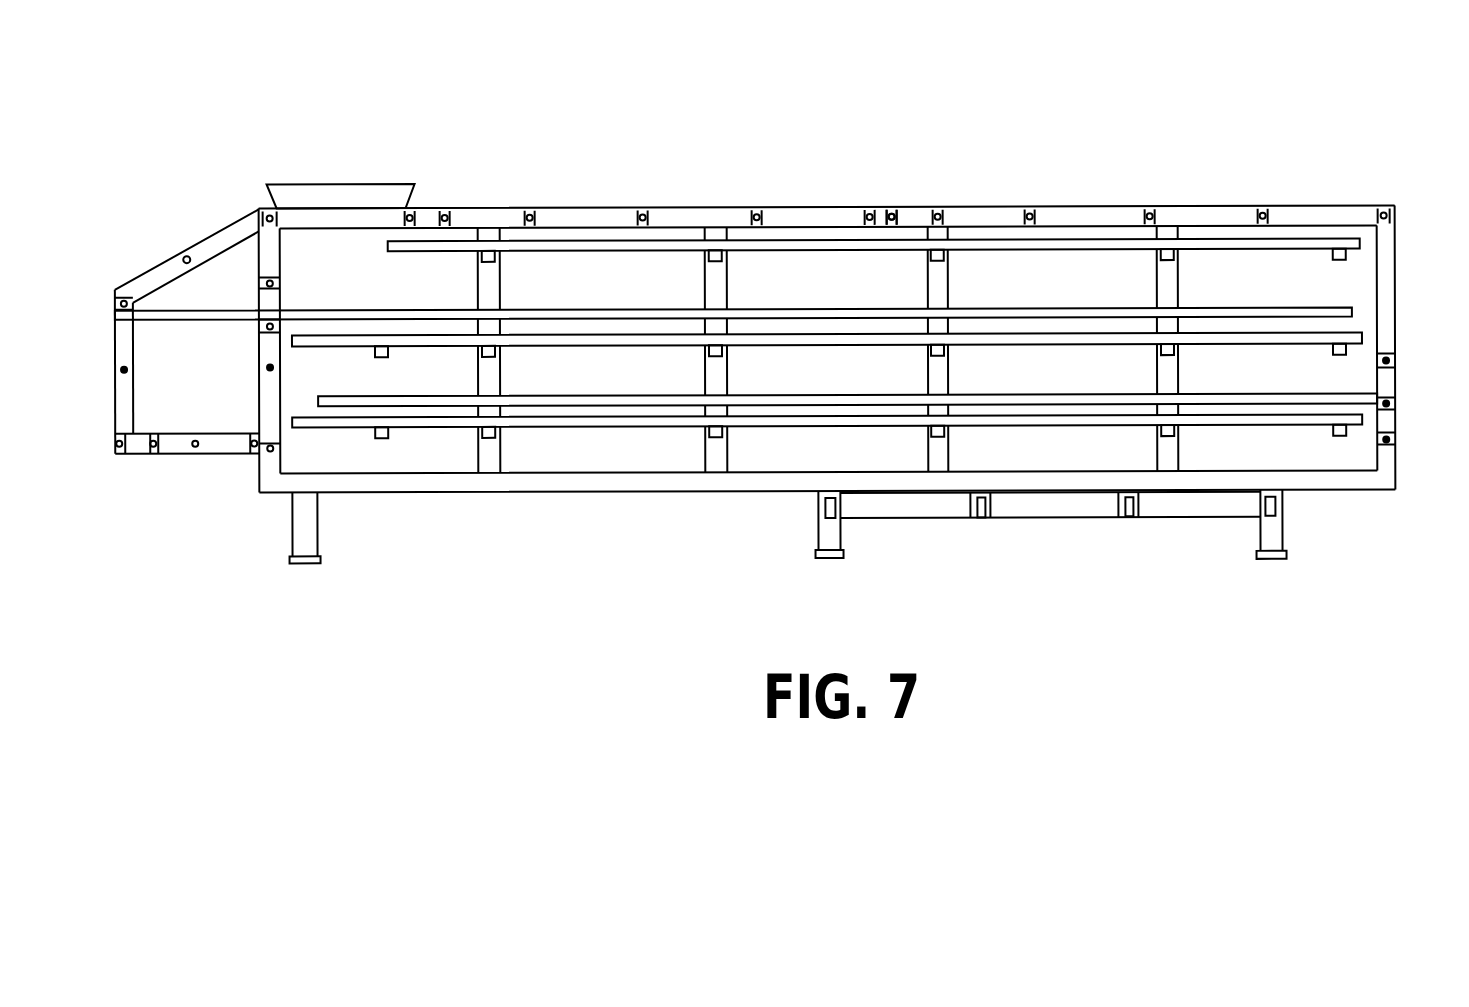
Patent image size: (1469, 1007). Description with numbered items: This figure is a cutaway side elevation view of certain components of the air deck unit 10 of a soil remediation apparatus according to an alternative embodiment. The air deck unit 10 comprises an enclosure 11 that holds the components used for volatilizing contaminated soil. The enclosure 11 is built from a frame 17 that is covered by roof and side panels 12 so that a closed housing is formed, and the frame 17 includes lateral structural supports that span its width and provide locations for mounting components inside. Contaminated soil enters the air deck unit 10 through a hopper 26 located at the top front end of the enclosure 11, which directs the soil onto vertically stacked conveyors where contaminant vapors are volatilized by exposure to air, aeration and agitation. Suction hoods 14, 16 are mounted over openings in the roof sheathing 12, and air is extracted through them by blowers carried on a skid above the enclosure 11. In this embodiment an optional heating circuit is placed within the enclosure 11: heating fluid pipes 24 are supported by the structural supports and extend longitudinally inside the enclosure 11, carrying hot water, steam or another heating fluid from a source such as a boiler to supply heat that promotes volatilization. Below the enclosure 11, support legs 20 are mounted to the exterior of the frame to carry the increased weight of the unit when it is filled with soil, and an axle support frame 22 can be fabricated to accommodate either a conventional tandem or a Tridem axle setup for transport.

The air deck unit 10 is at (380, 106).
The enclosure 11 is at (1388, 256).
The roof and side panels 12 is at (428, 207).
The suction hood 14 is at (492, 222).
The suction hood 16 is at (895, 217).
The frame 17 is at (715, 273).
The support legs 20 is at (1285, 530).
The axle support frame 22 is at (1025, 518).
The heating fluid pipes 24 is at (1303, 237).
The hopper 26 is at (335, 195).